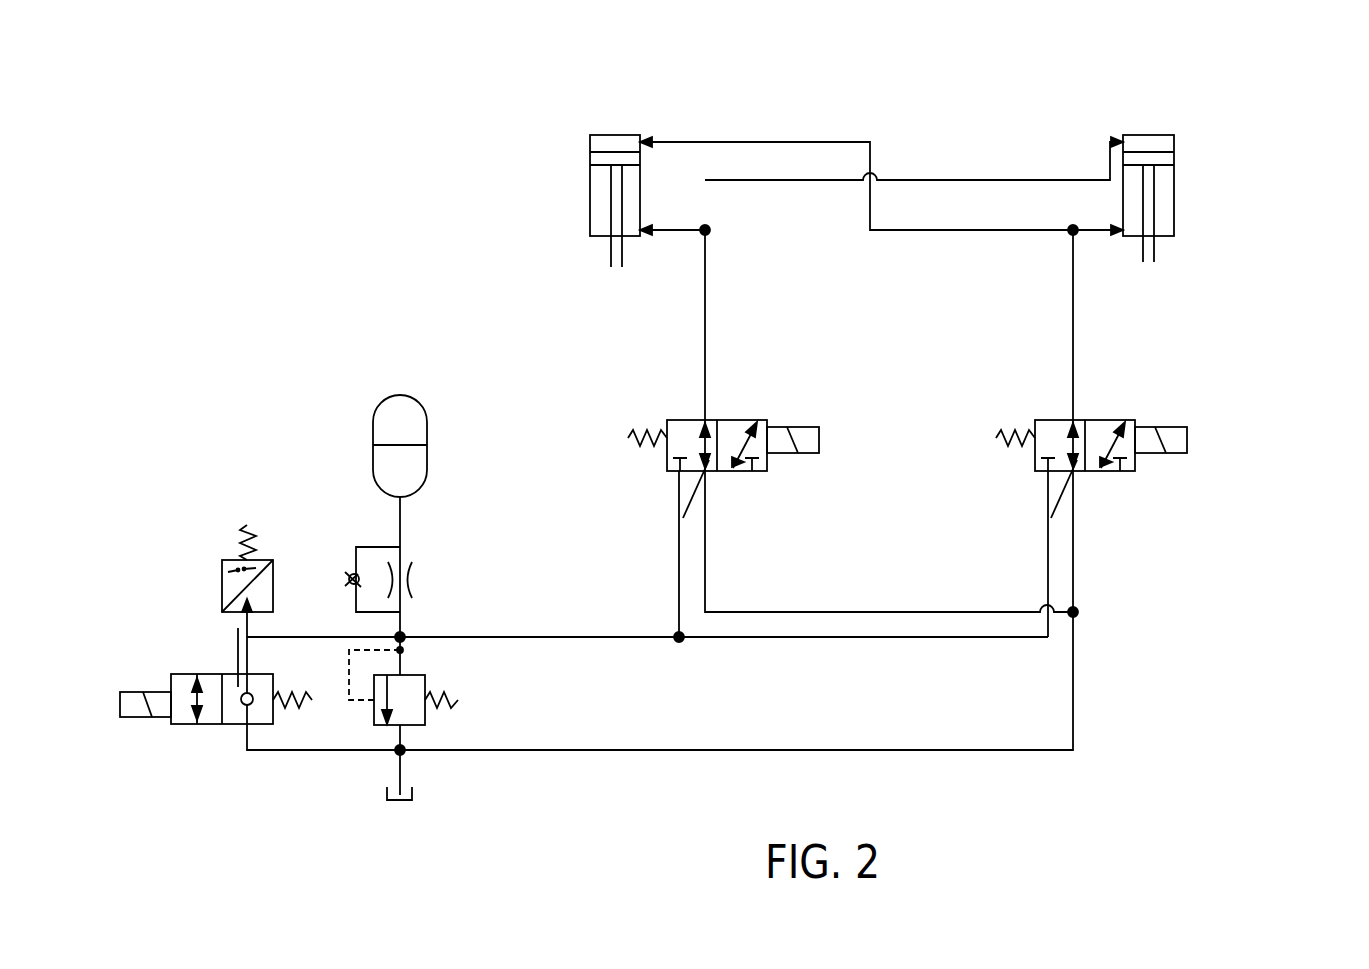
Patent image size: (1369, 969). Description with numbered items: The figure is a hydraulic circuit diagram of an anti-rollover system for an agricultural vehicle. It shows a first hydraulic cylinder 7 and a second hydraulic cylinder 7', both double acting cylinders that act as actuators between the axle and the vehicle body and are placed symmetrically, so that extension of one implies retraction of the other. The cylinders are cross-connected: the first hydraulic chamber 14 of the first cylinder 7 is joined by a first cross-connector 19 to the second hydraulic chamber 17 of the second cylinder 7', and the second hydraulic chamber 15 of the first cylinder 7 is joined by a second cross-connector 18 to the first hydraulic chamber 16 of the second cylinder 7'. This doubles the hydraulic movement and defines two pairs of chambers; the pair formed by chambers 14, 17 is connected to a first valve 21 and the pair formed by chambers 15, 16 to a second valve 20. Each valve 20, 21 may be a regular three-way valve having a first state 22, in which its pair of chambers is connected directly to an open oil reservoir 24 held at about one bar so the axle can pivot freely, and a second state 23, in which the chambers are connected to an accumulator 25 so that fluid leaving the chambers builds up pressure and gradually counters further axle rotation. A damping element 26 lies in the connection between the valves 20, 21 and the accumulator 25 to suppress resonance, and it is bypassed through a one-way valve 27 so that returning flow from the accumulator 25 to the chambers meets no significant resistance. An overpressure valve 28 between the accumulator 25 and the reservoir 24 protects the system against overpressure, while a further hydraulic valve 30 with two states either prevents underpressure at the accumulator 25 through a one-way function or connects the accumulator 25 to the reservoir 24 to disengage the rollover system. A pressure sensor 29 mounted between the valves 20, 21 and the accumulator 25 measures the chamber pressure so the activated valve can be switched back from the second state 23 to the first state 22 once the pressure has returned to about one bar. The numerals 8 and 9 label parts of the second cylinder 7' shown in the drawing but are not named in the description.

The second hydraulic cylinder 7' is at (695, 218).
The first hydraulic cylinder 7 is at (1240, 174).
The cylinder chamber / port 8 is at (640, 178).
The piston rod 9 is at (611, 252).
The first hydraulic chamber of the first cylinder 14 is at (1148, 140).
The second hydraulic chamber of the first cylinder 15 is at (1165, 212).
The first hydraulic chamber of the second cylinder 16 is at (614, 140).
The second hydraulic chamber of the second cylinder 17 is at (594, 193).
The second cross-connector 18 is at (935, 230).
The first cross-connector 19 is at (935, 180).
The second valve 20 is at (1201, 391).
The first valve 21 is at (833, 390).
The first state 22 is at (680, 420).
The second state 23 is at (740, 420).
The open oil reservoir 24 is at (405, 797).
The accumulator 25 is at (400, 410).
The damping element 26 is at (415, 582).
The one-way valve 27 is at (350, 575).
The overpressure valve 28 is at (425, 678).
The pressure sensor 29 is at (222, 592).
The further hydraulic valve 30 is at (178, 722).